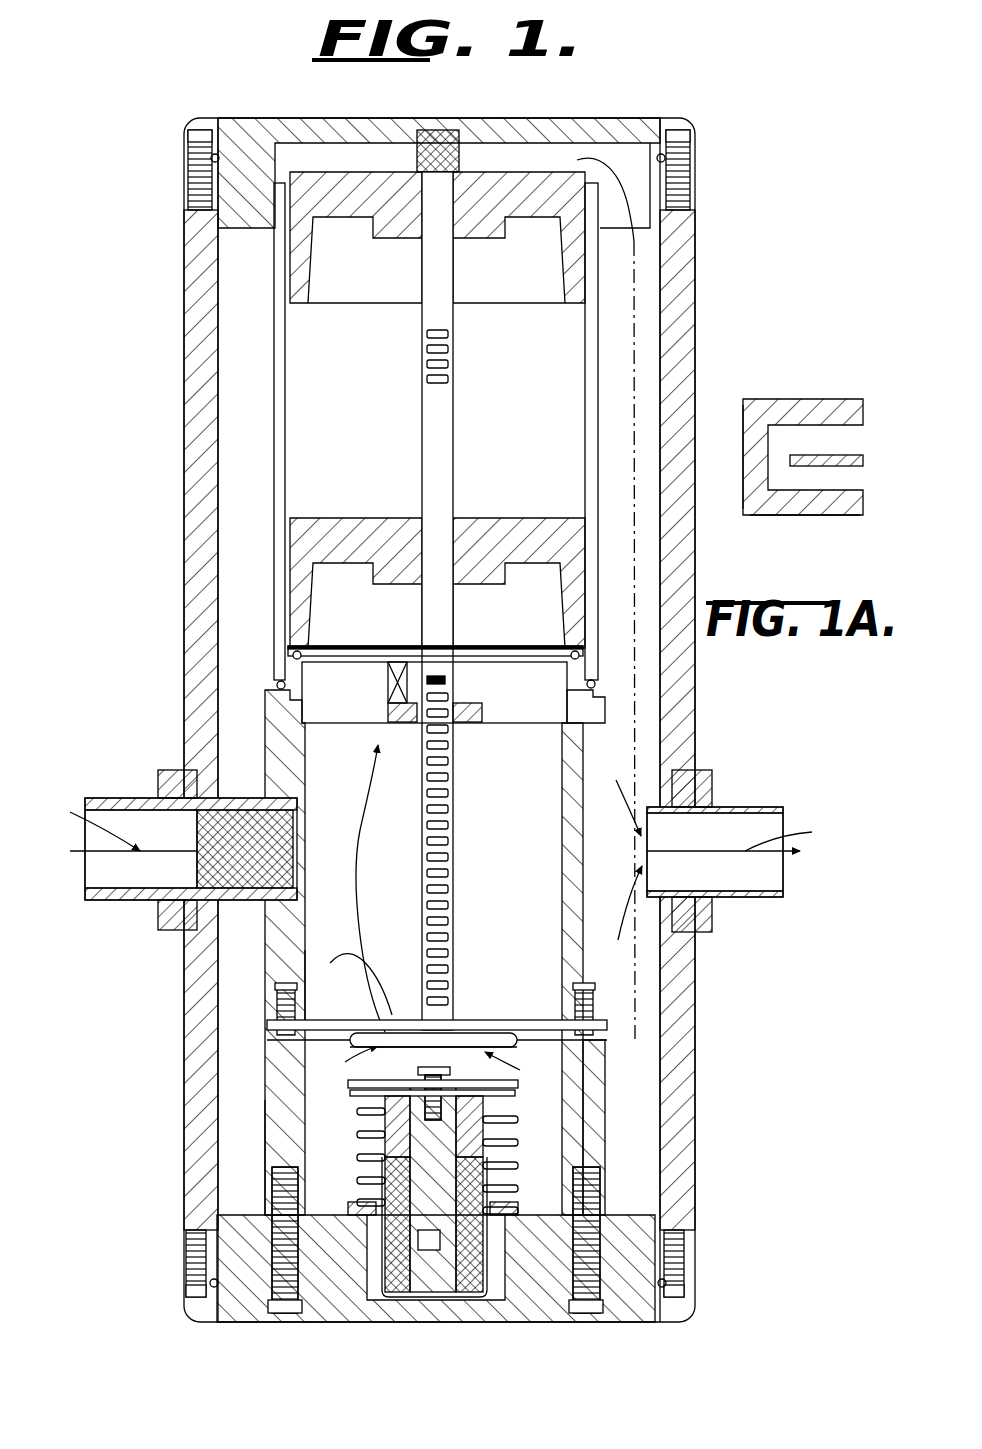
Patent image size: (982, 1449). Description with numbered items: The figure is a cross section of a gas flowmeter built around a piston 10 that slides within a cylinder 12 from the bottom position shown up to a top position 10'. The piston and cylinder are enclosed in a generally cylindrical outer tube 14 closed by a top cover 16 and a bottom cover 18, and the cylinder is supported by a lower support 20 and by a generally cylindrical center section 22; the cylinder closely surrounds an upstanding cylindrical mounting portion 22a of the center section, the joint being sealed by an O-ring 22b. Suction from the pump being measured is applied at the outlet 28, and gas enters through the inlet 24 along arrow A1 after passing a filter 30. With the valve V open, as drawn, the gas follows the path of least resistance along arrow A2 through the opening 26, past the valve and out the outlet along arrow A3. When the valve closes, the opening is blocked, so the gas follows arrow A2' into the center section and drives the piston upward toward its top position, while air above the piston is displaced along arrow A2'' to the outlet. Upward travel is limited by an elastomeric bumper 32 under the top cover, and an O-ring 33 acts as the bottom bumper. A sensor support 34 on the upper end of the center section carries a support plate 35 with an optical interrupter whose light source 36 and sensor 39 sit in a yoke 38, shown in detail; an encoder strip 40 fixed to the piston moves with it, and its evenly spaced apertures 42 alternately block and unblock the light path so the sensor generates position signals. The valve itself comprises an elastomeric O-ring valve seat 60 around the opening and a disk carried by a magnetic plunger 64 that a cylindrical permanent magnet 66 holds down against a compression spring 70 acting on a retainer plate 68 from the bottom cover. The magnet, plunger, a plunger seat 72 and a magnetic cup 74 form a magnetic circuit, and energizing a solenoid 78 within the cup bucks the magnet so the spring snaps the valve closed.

In FIG. 1, the piston 10 is at (345, 583).
In FIG. 1, the top position of piston 10' is at (345, 237).
In FIG. 1, the cylinder 12 is at (278, 430).
In FIG. 1, the outer tube 14 is at (196, 378).
In FIG. 1, the top cover 16 is at (275, 118).
In FIG. 1, the bottom cover 18 is at (242, 1314).
In FIG. 1, the lower support 20 is at (265, 1113).
In FIG. 1, the center section 22 is at (280, 967).
In FIG. 1, the cylindrical mounting portion 22a is at (290, 678).
In FIG. 1, the O-ring 22b is at (602, 687).
In FIG. 1, the inlet 24 is at (160, 800).
In FIG. 1, the opening 26 is at (357, 1052).
In FIG. 1, the outlet 28 is at (738, 806).
In FIG. 1, the filter 30 is at (247, 885).
In FIG. 1, the bumper 32 is at (442, 130).
In FIG. 1, the O-ring 33 is at (290, 655).
In FIG. 1, the sensor support 34 is at (330, 712).
In FIG. 1, the support plate 35 is at (399, 722).
In FIG. 1, the light source 36 is at (448, 683).
In FIG. 1A, the light source 36 is at (826, 390).
In FIG. 1, the yoke 38 is at (388, 680).
In FIG. 1A, the yoke 38 is at (742, 446).
In FIG. 1A, the sensor 39 is at (813, 527).
In FIG. 1, the encoder strip 40 is at (448, 828).
In FIG. 1A, the encoder strip 40 is at (840, 455).
In FIG. 1, the apertures 42 is at (447, 797).
In FIG. 1, the valve seat 60 is at (470, 1040).
In FIG. 1, the plunger 64 is at (478, 1118).
In FIG. 1, the permanent magnet 66 is at (372, 1130).
In FIG. 1, the retainer plate 68 is at (366, 1086).
In FIG. 1, the compression spring 70 is at (380, 1170).
In FIG. 1, the plunger seat 72 is at (422, 1300).
In FIG. 1, the cup 74 is at (362, 1300).
In FIG. 1, the solenoid 78 is at (472, 1295).
In FIG. 1, the inlet flow path arrow A1 is at (115, 821).
In FIG. 1, the flow path arrow A2 is at (421, 1006).
In FIG. 1, the flow path arrow A2' is at (368, 888).
In FIG. 1, the flow path arrow A2'' is at (581, 599).
In FIG. 1, the outlet flow path arrow A3 is at (740, 831).
In FIG. 1, the valve V is at (607, 1050).